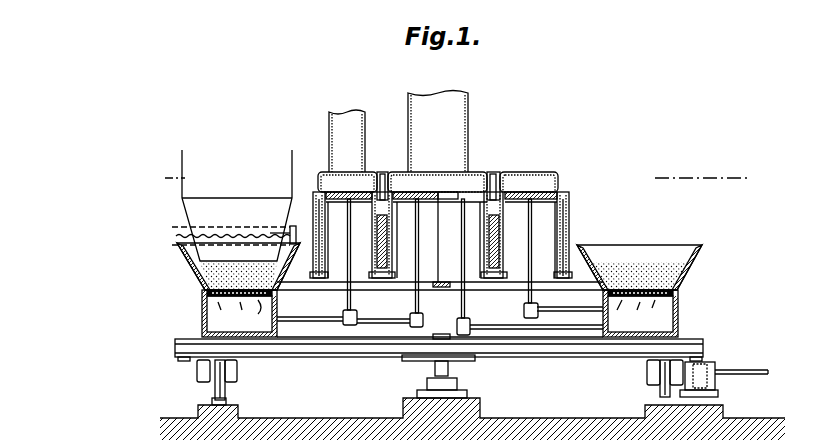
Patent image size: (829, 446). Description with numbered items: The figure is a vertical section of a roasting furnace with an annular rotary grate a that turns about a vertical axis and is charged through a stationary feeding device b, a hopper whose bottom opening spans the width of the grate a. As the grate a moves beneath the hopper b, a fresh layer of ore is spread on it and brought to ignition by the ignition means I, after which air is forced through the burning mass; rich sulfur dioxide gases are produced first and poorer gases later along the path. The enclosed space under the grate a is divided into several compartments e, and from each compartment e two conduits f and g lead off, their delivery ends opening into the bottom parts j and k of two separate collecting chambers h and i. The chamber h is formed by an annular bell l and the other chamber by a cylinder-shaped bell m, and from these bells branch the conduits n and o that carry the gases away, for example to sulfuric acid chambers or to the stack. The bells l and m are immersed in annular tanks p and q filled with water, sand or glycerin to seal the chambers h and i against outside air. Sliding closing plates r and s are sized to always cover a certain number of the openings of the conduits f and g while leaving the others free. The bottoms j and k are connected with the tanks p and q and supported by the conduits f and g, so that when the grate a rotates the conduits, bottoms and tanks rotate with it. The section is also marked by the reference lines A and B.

The annular grate a is at (200, 279).
The feeding device b is at (208, 213).
The compartment e is at (440, 313).
The conduit f is at (347, 296).
The conduit g is at (415, 298).
The chamber h is at (441, 188).
The chamber i is at (440, 188).
The bottom part j is at (441, 240).
The bottom part k is at (441, 240).
The annular bell l is at (318, 184).
The cylinder-shaped bell m is at (488, 172).
The conduit n is at (360, 134).
The conduit o is at (468, 110).
The annular tank p is at (324, 255).
The annular tank q is at (392, 252).
The plate r is at (372, 186).
The plate s is at (437, 182).
The datum line A is at (165, 172).
The datum line B is at (711, 175).
The ignition means I is at (176, 243).